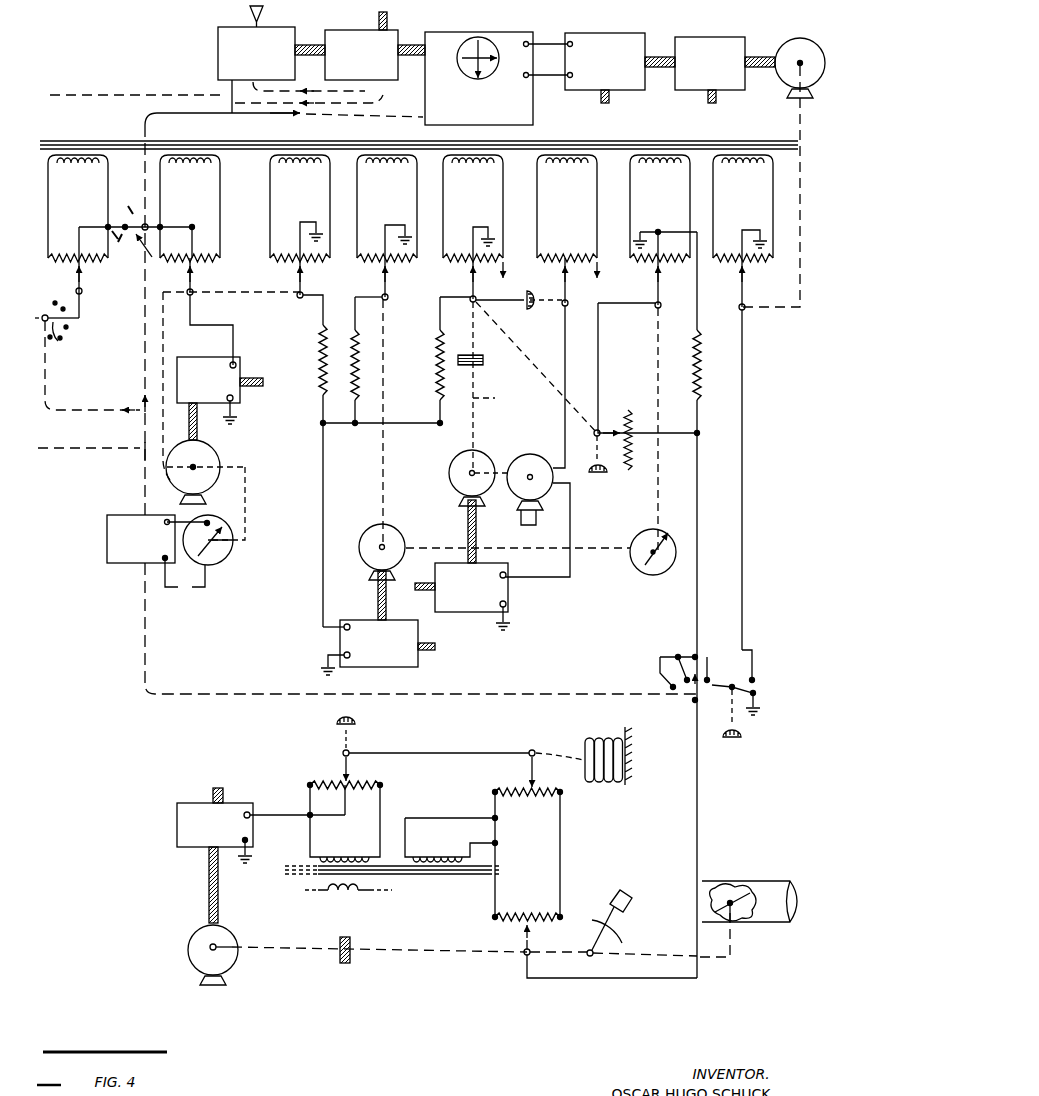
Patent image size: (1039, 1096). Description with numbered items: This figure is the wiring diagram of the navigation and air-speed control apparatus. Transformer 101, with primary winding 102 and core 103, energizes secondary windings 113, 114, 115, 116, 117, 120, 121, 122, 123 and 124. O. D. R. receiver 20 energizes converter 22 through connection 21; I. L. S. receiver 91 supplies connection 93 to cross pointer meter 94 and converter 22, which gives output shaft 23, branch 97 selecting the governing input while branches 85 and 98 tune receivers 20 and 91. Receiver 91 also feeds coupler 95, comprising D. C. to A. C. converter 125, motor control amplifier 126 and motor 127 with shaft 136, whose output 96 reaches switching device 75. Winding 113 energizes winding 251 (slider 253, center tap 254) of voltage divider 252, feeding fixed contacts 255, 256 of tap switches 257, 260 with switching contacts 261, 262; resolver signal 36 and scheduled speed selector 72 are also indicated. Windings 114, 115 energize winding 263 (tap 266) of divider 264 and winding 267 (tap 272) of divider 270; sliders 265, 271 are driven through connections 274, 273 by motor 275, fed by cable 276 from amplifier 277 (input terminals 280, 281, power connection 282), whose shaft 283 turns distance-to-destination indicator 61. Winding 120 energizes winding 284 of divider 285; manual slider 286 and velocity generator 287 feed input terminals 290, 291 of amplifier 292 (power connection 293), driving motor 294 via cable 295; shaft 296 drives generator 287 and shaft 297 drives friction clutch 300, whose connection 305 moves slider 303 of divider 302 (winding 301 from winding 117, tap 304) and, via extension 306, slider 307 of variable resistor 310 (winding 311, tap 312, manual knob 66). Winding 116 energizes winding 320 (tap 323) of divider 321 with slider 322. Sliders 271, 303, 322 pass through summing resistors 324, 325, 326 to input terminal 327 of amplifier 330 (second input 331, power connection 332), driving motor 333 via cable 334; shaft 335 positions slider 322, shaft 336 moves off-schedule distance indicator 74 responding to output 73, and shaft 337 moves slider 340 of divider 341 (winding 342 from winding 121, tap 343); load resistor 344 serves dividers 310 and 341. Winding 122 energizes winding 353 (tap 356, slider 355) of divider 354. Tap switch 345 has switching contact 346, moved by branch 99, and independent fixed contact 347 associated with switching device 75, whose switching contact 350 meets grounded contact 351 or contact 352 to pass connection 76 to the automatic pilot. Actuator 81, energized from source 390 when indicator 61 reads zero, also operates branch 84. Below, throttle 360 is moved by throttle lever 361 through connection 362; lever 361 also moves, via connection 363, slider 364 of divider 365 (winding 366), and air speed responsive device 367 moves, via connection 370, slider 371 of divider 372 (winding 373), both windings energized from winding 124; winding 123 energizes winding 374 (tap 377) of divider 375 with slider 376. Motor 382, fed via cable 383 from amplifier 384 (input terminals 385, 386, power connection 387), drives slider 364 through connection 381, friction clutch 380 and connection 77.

The omnidirectional range receiver 20 is at (218, 37).
The branch of mechanical connection 85 is at (233, 100).
The mechanical output shaft 23 is at (232, 100).
The receiver output connection 21 is at (300, 30).
The converter 22 is at (340, 30).
The I.L.S. receiver output connection 93 is at (413, 45).
The I.L.S. receiver 91 is at (456, 32).
The cross pointer meter 94 is at (495, 45).
The D.C. to A.C. converter 125 is at (619, 33).
The motor control amplifier 126 is at (705, 37).
The coupling unit 95 is at (718, 33).
The motor 127 is at (795, 40).
The branch of mechanical connection 98 is at (384, 112).
The branch of mechanical connection 97 is at (379, 108).
The core 103 is at (585, 148).
The transformer 101 is at (690, 148).
The output shaft 136 is at (797, 140).
The secondary winding 113 is at (72, 163).
The secondary winding 114 is at (196, 163).
The secondary winding 115 is at (297, 163).
The secondary winding 116 is at (378, 163).
The secondary winding 117 is at (474, 163).
The secondary winding 120 is at (568, 163).
The secondary winding 121 is at (655, 164).
The secondary winding 122 is at (735, 165).
The voltage divider winding 251 is at (77, 255).
The fixed contact 256 is at (122, 222).
The switching contact 262 is at (148, 226).
The center tap 266 is at (192, 250).
The voltage divider winding 263 is at (212, 255).
The center tap 272 is at (299, 255).
The voltage divider 270 is at (345, 235).
The center tap 304 is at (473, 256).
The voltage divider winding 301 is at (500, 260).
The voltage divider winding 284 is at (558, 262).
The voltage divider winding 342 is at (640, 246).
The center tap 356 is at (742, 256).
The slider 253 is at (76, 283).
The voltage divider 252 is at (86, 278).
The center tap 254 is at (84, 258).
The tap switch 260 is at (174, 276).
The voltage divider 264 is at (208, 268).
The slider 265 is at (202, 290).
The slider 271 is at (298, 270).
The voltage divider winding 267 is at (308, 265).
The voltage divider winding 320 is at (412, 263).
The center tap 323 is at (364, 287).
The slider 322 is at (388, 297).
The voltage divider 321 is at (440, 298).
The voltage divider 302 is at (494, 268).
The slider 303 is at (516, 280).
The voltage divider 341 is at (643, 271).
The slider 286 is at (626, 294).
The voltage divider 285 is at (571, 298).
The center tap 343 is at (662, 268).
The voltage divider winding 353 is at (740, 300).
The voltage divider 354 is at (750, 273).
The slider 340 is at (697, 326).
The slider 355 is at (741, 311).
The scheduled speed selector 72 is at (530, 306).
The resolver output signal 36 is at (44, 315).
The fixed contact 255 is at (76, 322).
The tap switch 257 is at (74, 346).
The switching contact 261 is at (62, 358).
The summing resistor 324 is at (323, 345).
The summing resistor 325 is at (438, 350).
The summing resistor 326 is at (360, 385).
The mechanical connection 305 is at (476, 312).
The mechanical connection extension 306 is at (520, 340).
The friction clutch 300 is at (491, 362).
The shaft extension 297 is at (505, 386).
The slider 307 is at (603, 410).
The variable resistor winding 311 is at (631, 412).
The manual knob 66 is at (596, 464).
The variable resistor 310 is at (615, 470).
The intermediate tap 312 is at (628, 470).
The mechanical connection 273 is at (250, 295).
The motor control amplifier 277 is at (208, 357).
The input terminal 280 is at (236, 363).
The power connection 282 is at (252, 378).
The input terminal 281 is at (233, 400).
The cable 276 is at (197, 425).
The motor 275 is at (235, 465).
The mechanical connection 274 is at (160, 398).
The shaft extension 283 is at (248, 505).
The branch of mechanical connection 84 is at (93, 452).
The actuator 81 is at (110, 552).
The distance-to-destination indicator 61 is at (230, 545).
The source of electrical energy 390 is at (190, 595).
The shaft extension 296 is at (505, 470).
The velocity generator 287 is at (528, 455).
The motor 294 is at (449, 472).
The shaft extension 335 is at (386, 456).
The motor 333 is at (375, 532).
The shaft extension 336 is at (438, 548).
The cable 295 is at (477, 530).
The input terminal 290 is at (506, 573).
The input terminal 291 is at (506, 605).
The amplifier 292 is at (480, 612).
The power connection 293 is at (425, 592).
The power connection 332 is at (430, 642).
The cable 334 is at (378, 594).
The input terminal 327 is at (335, 627).
The input terminal 331 is at (346, 670).
The amplifier 330 is at (395, 668).
The branch of mechanical connection 99 is at (514, 694).
The off-schedule distance indicator 74 is at (650, 575).
The shaft extension 337 is at (657, 530).
The subtracter output 73 is at (698, 608).
The fixed contact 352 is at (752, 675).
The switching device 75 is at (771, 668).
The fixed contact 347 is at (710, 683).
The switching contact 346 is at (683, 690).
The tap switch 345 is at (692, 705).
The grounded fixed contact 351 is at (762, 715).
The switching contact 350 is at (745, 718).
The mechanical connection 370 is at (556, 758).
The slider 371 is at (530, 762).
The voltage divider 372 is at (567, 781).
The voltage divider winding 373 is at (527, 796).
The voltage divider 375 is at (330, 777).
The slider 376 is at (348, 768).
The center tap 377 is at (327, 800).
The voltage divider winding 374 is at (365, 792).
The air speed responsive device 367 is at (625, 788).
The amplifier 384 is at (188, 803).
The power connection 387 is at (223, 795).
The input terminal 385 is at (250, 812).
The input terminal 386 is at (248, 840).
The cable 383 is at (218, 895).
The motor 382 is at (236, 935).
The mechanical connection 381 is at (292, 958).
The friction clutch 380 is at (347, 965).
The mechanical connection 77 is at (415, 956).
The secondary winding 123 is at (340, 856).
The secondary winding 124 is at (432, 857).
The primary winding 102 is at (348, 896).
The voltage divider winding 366 is at (527, 916).
The voltage divider 365 is at (522, 932).
The slider 364 is at (531, 938).
The mechanical connection 363 is at (570, 957).
The throttle lever 361 is at (615, 903).
The throttle 360 is at (735, 888).
The mechanical connection 362 is at (700, 960).
The connection to automatic pilot 76 is at (698, 773).
The coupler output signal 96 is at (743, 368).
The load resistor 344 is at (705, 380).